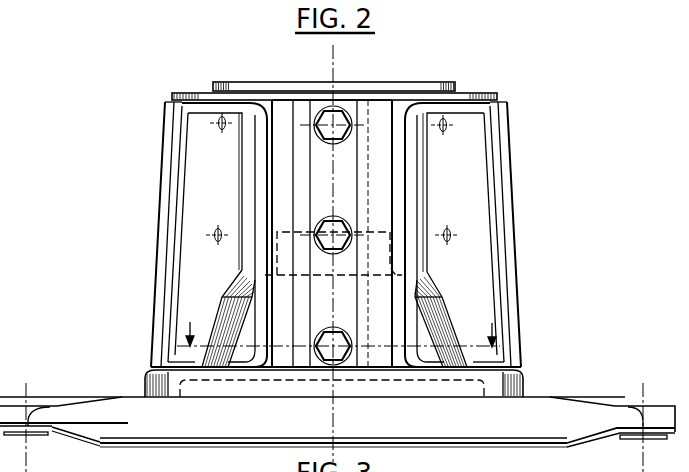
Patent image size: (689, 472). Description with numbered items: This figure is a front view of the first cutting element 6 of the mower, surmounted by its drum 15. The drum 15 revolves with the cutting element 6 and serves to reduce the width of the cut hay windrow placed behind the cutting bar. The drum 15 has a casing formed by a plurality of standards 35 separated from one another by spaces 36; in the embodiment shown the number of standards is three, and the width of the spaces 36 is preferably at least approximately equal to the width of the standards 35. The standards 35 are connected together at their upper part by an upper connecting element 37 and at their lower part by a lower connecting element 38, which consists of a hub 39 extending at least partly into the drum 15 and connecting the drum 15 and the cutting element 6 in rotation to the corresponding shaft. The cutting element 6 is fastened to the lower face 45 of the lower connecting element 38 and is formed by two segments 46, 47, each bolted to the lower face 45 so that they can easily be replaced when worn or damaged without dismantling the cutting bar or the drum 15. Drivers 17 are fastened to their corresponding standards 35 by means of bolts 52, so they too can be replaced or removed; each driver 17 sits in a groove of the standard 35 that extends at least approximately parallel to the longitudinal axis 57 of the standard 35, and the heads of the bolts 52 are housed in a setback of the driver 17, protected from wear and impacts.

The cutting element 6 is at (178, 446).
The drum 15 is at (135, 244).
The driver 17 is at (152, 295).
The standard 35 is at (185, 170).
The space 36 is at (195, 220).
The upper connecting element 37 is at (476, 97).
The lower connecting element 38 is at (512, 390).
The hub 39 is at (423, 322).
The lower face 45 is at (167, 398).
The segment 46 is at (112, 428).
The segment 47 is at (535, 430).
The bolt 52 is at (325, 107).
The longitudinal axis 57 is at (335, 58).